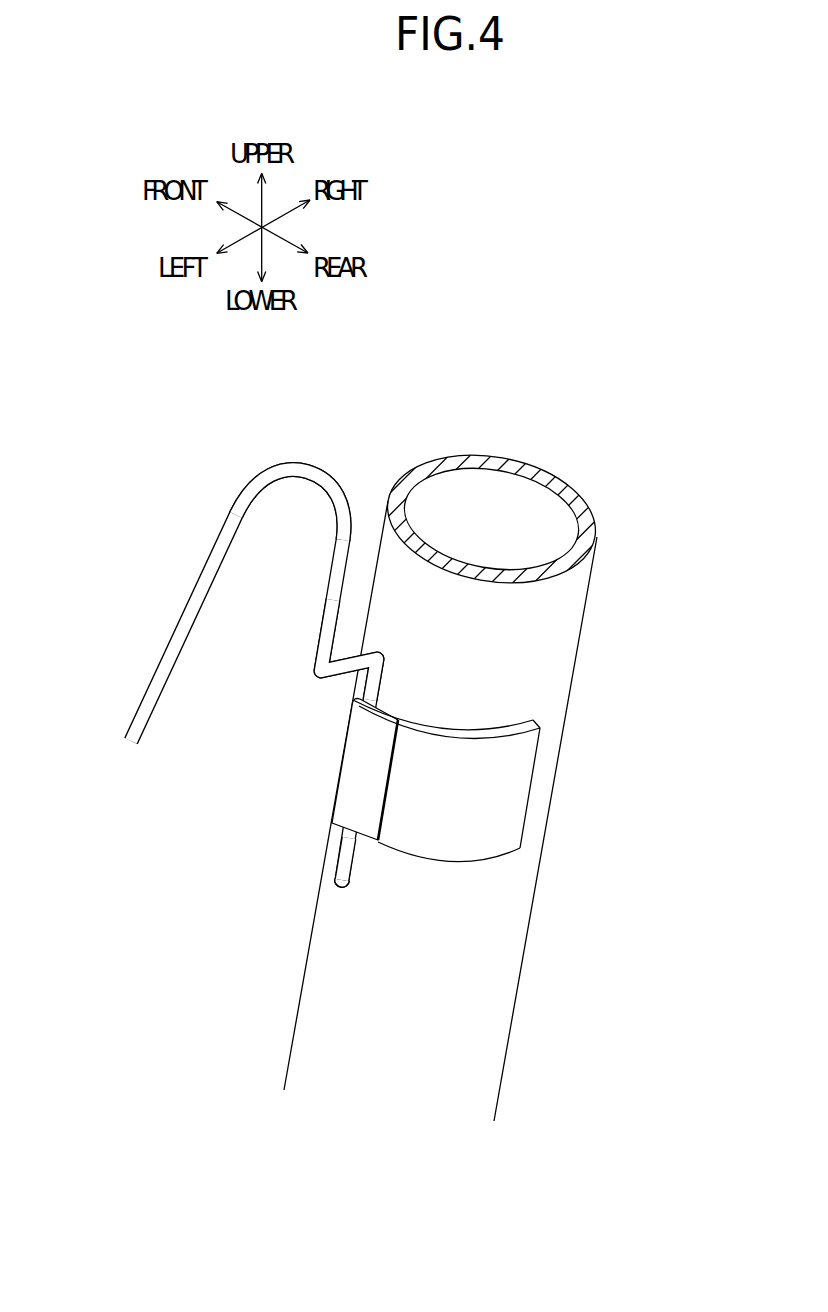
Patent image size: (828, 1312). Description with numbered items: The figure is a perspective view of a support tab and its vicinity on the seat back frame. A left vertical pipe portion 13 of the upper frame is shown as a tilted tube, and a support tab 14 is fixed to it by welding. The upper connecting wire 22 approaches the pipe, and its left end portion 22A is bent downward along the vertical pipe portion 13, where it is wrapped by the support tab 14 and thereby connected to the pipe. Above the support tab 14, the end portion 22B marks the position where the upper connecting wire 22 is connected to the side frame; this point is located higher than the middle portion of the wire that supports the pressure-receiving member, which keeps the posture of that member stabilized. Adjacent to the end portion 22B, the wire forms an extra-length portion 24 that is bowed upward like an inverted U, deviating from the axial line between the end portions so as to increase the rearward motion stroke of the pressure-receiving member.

The vertical pipe portion 13 is at (542, 647).
The support tab 14 is at (505, 790).
The upper connecting wire 22 is at (190, 583).
The left end portion 22A is at (338, 853).
The end portion 22B is at (365, 652).
The extra-length portion 24 is at (303, 464).